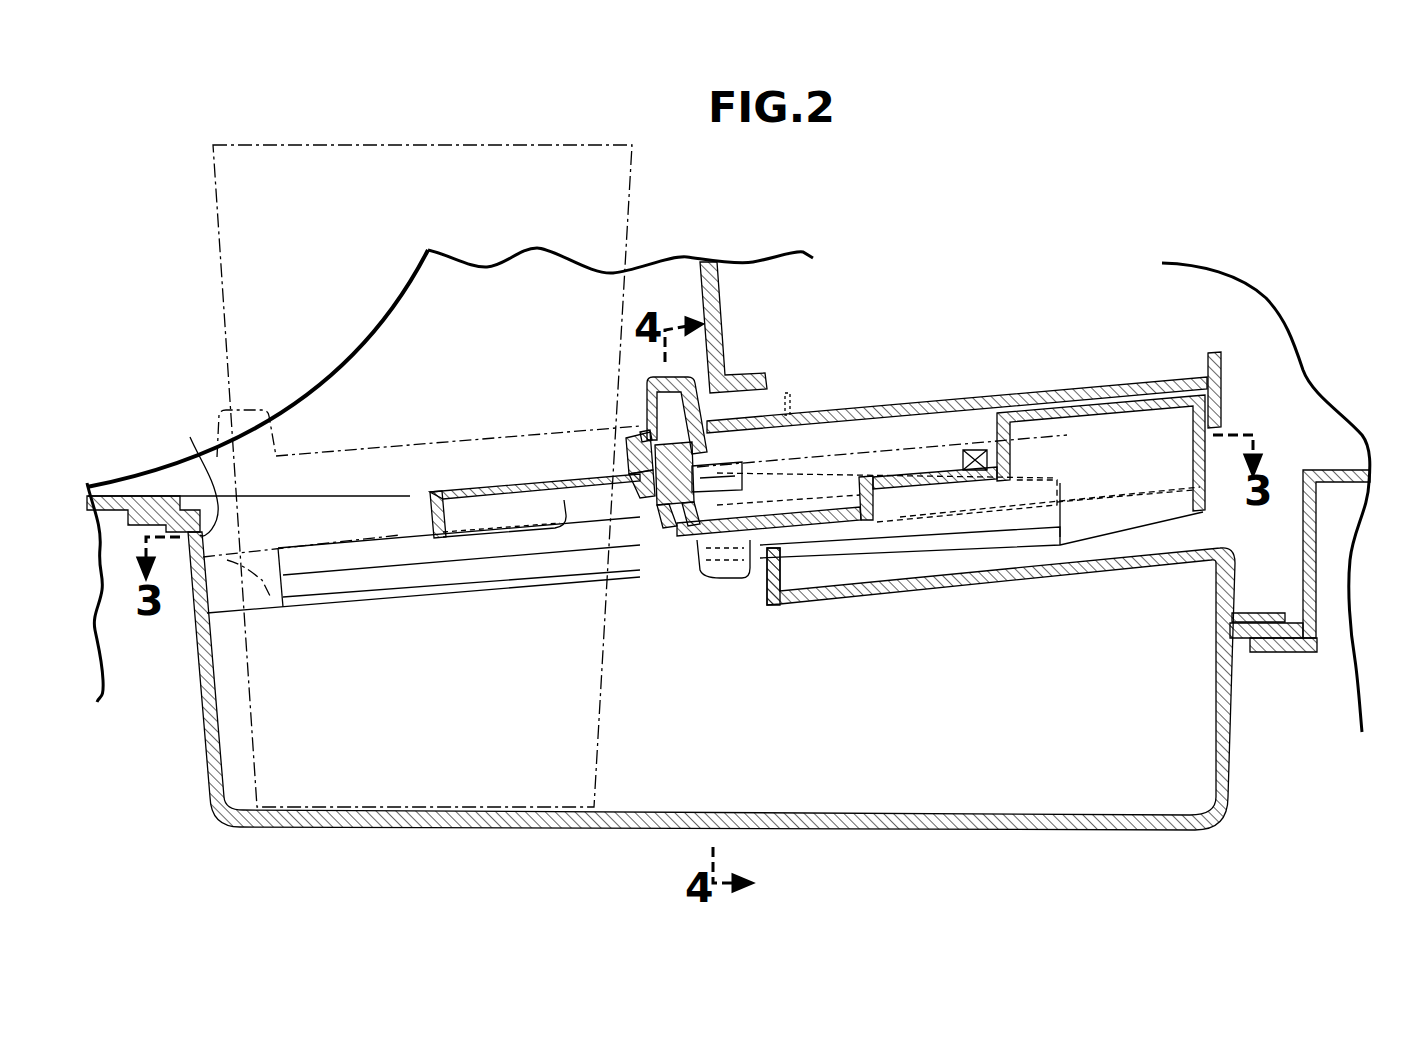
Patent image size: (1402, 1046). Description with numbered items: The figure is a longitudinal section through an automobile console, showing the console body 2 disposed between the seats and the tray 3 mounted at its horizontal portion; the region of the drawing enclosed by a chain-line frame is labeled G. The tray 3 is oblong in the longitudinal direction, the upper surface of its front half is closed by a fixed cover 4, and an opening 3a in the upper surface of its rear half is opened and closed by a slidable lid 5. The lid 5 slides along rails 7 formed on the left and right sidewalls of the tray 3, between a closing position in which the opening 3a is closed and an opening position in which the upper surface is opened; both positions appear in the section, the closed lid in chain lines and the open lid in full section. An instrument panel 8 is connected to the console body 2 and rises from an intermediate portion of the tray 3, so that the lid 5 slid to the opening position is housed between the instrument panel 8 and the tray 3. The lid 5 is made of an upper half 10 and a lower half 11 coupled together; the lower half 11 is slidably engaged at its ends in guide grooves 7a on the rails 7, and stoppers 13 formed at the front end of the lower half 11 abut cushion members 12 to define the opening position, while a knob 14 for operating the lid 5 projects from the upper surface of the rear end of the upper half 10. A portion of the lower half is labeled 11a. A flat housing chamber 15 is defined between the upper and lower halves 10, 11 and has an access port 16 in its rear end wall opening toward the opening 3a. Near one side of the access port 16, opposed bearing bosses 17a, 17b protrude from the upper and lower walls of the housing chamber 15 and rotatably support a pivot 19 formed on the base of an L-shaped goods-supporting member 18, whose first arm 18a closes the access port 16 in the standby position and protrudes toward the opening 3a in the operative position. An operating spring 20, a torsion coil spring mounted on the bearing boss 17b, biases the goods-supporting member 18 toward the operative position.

The glove box region G is at (632, 175).
The console body 2 is at (1337, 470).
The tray 3 is at (1230, 750).
The opening 3a is at (193, 470).
The fixed cover 4 is at (987, 585).
The lid 5 is at (395, 440).
The rail 7 is at (367, 543).
The guide groove 7a is at (385, 581).
The instrument panel 8 is at (704, 293).
The upper half 10 is at (942, 403).
The lower half 11 is at (1103, 403).
The inner box portion 11a is at (1100, 497).
The cushion member 12 is at (759, 562).
The stopper 13 is at (723, 579).
The knob 14 is at (648, 393).
The housing chamber 15 is at (797, 440).
The access port 16 is at (628, 467).
The bearing boss 17a is at (730, 445).
The bearing boss 17b is at (663, 541).
The goods-supporting member 18 is at (497, 476).
The first arm 18a is at (473, 526).
The pivot 19 is at (645, 418).
The operating spring 20 is at (653, 537).